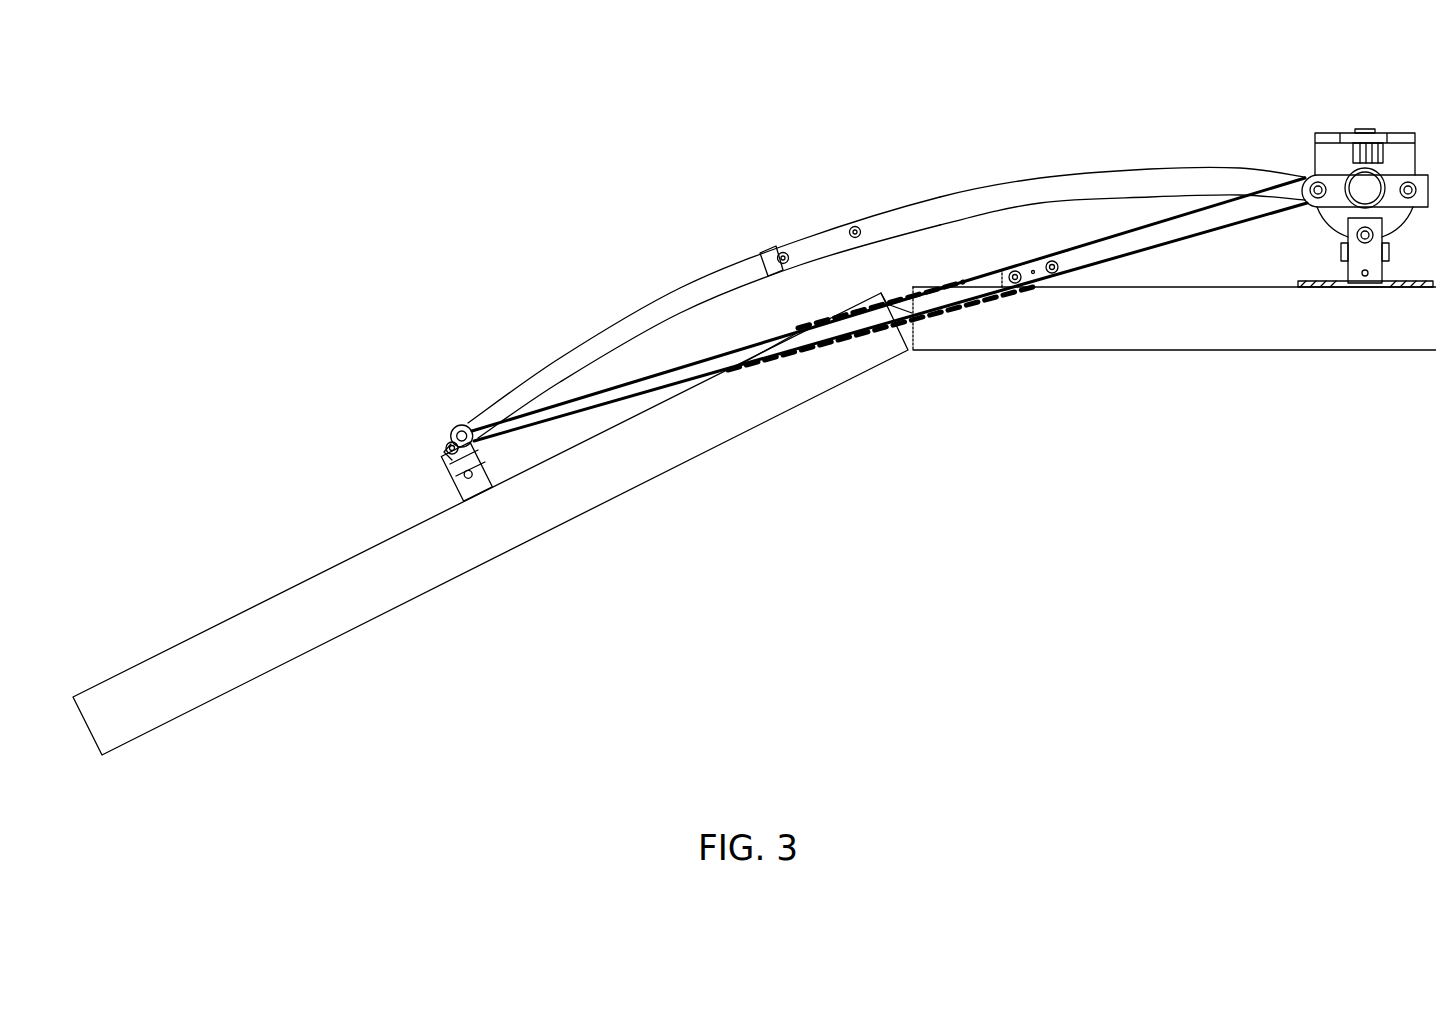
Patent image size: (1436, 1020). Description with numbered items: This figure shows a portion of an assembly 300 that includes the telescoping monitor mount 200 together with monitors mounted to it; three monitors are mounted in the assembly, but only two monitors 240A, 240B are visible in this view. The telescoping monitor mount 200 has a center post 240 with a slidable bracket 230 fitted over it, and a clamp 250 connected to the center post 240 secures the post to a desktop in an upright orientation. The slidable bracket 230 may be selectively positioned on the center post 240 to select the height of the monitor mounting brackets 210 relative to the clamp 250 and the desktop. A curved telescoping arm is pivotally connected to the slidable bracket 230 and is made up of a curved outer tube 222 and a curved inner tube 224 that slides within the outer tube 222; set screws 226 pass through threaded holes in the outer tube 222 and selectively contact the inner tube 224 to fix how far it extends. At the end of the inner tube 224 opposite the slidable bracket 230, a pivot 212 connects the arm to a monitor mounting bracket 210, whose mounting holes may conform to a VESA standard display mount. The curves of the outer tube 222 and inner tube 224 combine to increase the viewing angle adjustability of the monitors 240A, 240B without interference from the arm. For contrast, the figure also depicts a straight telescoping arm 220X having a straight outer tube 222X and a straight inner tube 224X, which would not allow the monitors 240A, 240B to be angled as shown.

The assembly 300 is at (244, 141).
The telescoping monitor mount 200 is at (725, 159).
The monitor mounting bracket 210 is at (430, 516).
The pivot 212 is at (447, 432).
The straight telescoping arm 220X is at (1013, 265).
The outer tube 222 is at (1174, 183).
The straight outer tube 222X is at (1117, 250).
The inner tube 224 is at (629, 325).
The straight inner tube 224X is at (684, 373).
The set screw 226 is at (781, 252).
The slidable bracket 230 is at (1312, 179).
The center post 240 is at (1366, 183).
The monitor 240A is at (651, 467).
The monitor 240B is at (1164, 334).
The clamp 250 is at (1330, 228).